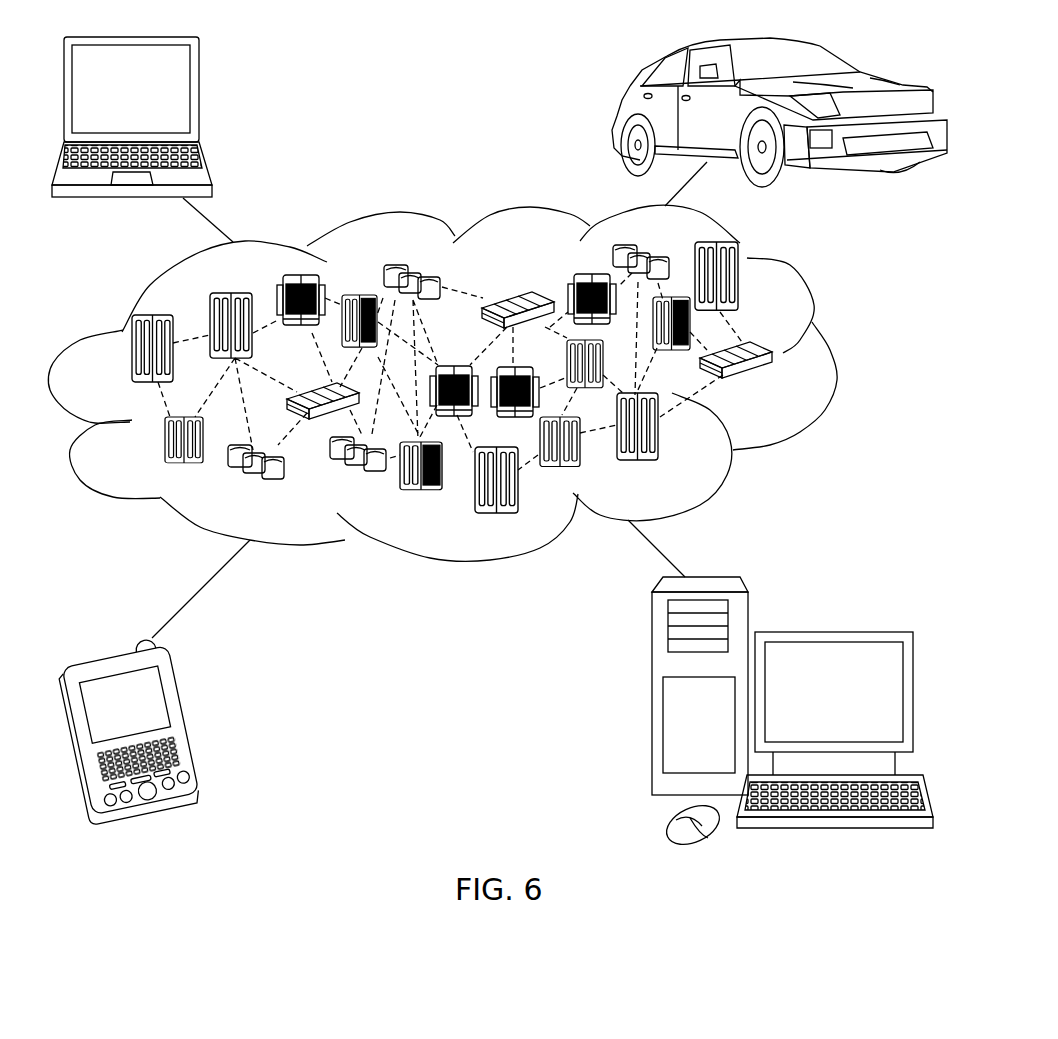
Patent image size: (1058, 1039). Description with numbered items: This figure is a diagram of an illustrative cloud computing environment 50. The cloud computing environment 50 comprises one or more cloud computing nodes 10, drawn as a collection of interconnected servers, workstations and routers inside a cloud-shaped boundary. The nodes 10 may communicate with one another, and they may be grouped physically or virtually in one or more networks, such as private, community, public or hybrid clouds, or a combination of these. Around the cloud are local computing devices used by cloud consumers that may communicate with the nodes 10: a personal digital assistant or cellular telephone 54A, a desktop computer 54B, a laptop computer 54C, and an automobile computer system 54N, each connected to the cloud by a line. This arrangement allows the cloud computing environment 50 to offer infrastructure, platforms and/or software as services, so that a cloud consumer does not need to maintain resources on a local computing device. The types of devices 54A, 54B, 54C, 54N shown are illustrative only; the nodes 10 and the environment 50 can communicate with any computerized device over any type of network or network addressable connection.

The cloud computing nodes 10 is at (503, 377).
The cloud computing environment 50 is at (828, 358).
The personal digital assistant (PDA) or cellular telephone 54A is at (187, 724).
The desktop computer 54B is at (832, 632).
The laptop computer 54C is at (199, 97).
The automobile computer system 54N is at (618, 112).